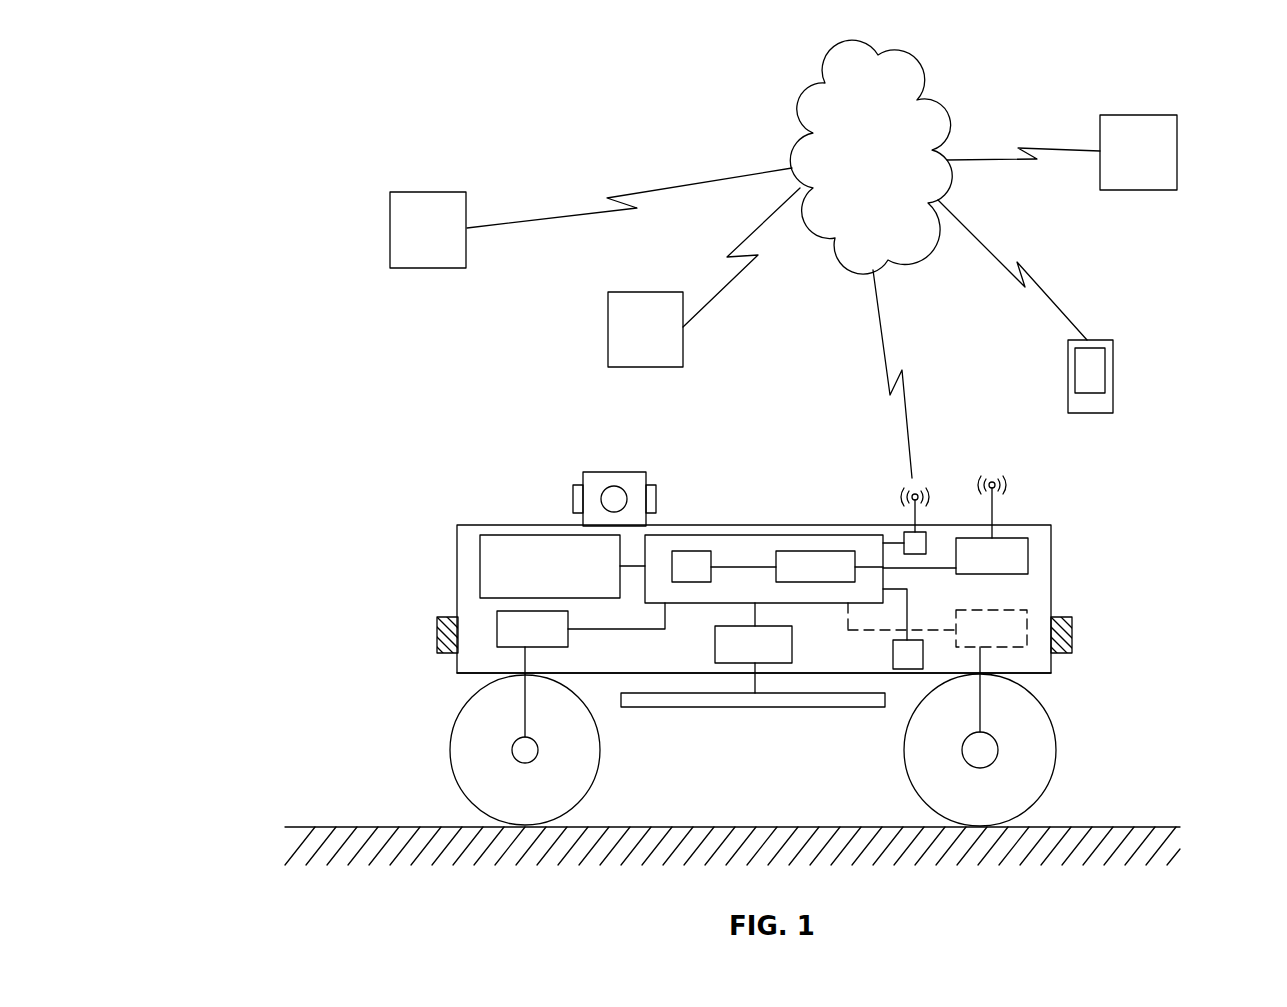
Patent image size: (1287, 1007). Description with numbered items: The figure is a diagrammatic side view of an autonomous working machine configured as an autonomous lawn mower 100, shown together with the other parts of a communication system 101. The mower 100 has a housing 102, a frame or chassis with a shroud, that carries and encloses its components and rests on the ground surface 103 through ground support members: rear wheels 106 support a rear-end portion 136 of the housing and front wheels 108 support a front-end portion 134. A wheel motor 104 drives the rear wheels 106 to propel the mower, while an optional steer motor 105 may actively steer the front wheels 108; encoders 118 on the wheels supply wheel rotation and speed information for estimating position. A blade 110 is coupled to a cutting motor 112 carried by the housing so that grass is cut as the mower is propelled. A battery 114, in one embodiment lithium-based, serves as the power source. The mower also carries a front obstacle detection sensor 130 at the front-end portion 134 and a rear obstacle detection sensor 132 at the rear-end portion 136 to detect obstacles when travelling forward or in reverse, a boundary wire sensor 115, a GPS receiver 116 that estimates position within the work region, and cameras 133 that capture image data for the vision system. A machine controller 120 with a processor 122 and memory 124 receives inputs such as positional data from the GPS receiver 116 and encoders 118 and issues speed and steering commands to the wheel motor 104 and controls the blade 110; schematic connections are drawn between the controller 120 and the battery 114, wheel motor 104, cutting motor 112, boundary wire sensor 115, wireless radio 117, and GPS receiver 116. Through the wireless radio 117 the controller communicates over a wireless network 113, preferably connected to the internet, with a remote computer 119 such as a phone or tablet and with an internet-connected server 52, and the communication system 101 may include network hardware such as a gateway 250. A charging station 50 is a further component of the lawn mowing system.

The communication system 101 is at (310, 115).
The wireless network 113 is at (935, 66).
The charging station 50 is at (433, 192).
The internet-connected server 52 is at (1177, 150).
The gateway 250 is at (608, 327).
The remote computer 119 is at (1068, 367).
The camera 133 is at (617, 472).
The autonomous lawn mower 100 is at (552, 516).
The battery 114 is at (480, 545).
The rear-end portion 136 is at (458, 550).
The wheel motor 104 is at (495, 620).
The rear obstacle detection sensor 132 is at (437, 627).
The housing 102 is at (458, 667).
The machine controller 120 is at (757, 535).
The processor 122 is at (692, 551).
The memory 124 is at (815, 551).
The cutting motor 112 is at (792, 640).
The blade 110 is at (752, 707).
The boundary wire sensor 115 is at (905, 673).
The wireless radio 117 is at (940, 525).
The GPS receiver 116 is at (1015, 525).
The steer motor 105 is at (1027, 617).
The front-end portion 134 is at (1051, 548).
The front obstacle detection sensor 130 is at (1072, 630).
The rear wheel 106 is at (451, 730).
The front wheel 108 is at (1057, 745).
The encoder 118 is at (538, 745).
The ground surface 103 is at (343, 826).